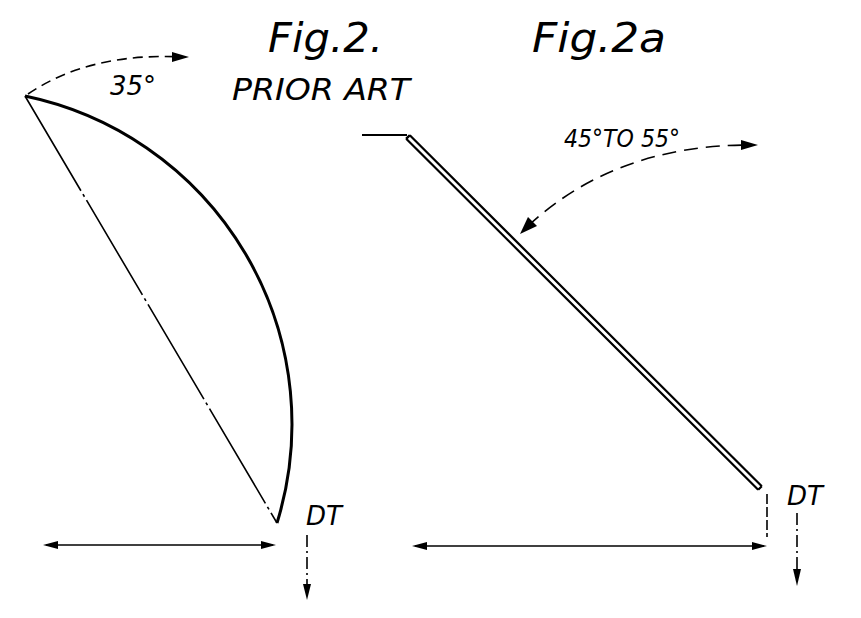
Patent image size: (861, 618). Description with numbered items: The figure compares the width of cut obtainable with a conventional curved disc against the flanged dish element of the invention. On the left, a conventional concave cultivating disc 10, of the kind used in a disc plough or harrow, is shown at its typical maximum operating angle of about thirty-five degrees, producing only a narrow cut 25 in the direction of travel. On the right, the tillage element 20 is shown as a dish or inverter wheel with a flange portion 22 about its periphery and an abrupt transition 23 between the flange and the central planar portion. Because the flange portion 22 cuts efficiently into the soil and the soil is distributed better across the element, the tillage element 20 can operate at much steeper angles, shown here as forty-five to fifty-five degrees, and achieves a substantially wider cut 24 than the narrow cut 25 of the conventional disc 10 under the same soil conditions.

In FIG. 2, the conventional concave cultivating disc 10 is at (138, 277).
In FIG. 2, the narrow cut 25 is at (159, 528).
In FIG. 2A, the tillage element 20 is at (618, 335).
In FIG. 2A, the flange portion 22 is at (383, 138).
In FIG. 2A, the abrupt transition 23 is at (413, 132).
In FIG. 2A, the wider cut 24 is at (589, 522).